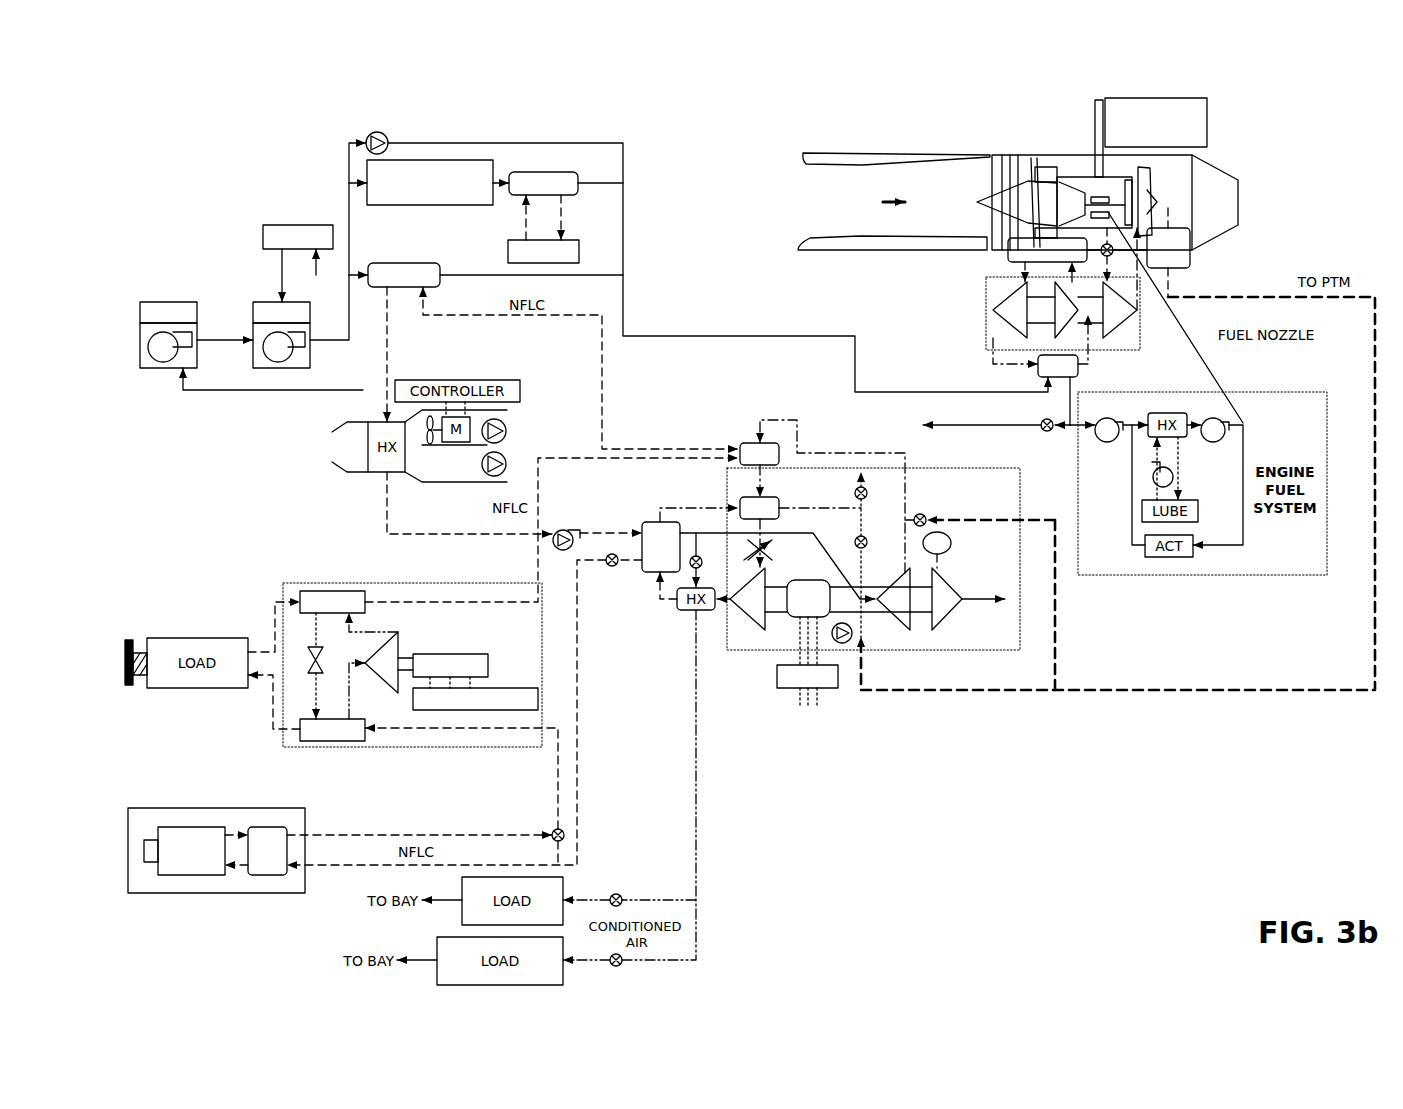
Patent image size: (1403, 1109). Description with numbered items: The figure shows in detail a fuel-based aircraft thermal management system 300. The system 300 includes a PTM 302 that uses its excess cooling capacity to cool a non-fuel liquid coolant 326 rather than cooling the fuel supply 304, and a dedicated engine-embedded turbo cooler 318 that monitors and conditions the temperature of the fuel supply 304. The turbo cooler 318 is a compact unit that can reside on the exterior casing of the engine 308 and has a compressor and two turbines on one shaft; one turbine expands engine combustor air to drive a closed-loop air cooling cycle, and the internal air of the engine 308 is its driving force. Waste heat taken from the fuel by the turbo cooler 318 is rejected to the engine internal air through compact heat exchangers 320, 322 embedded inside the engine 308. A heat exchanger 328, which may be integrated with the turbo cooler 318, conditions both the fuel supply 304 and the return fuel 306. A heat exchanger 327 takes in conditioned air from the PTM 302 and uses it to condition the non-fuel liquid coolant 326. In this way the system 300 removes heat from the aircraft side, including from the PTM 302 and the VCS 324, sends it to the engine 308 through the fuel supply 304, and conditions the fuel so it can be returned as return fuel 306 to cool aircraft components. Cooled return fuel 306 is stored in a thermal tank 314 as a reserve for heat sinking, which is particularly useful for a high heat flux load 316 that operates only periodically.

The system 300 is at (283, 117).
The PTM 302 is at (727, 495).
The fuel supply 304 is at (688, 336).
The return fuel 306 is at (228, 392).
The engine 308 is at (1045, 153).
The thermal tank 314 is at (149, 370).
The load 316 is at (192, 827).
The turbo cooler 318 is at (986, 345).
The heat exchanger 320 is at (1005, 257).
The heat exchanger 322 is at (1190, 262).
The VCS 324 is at (460, 747).
The non-fuel liquid coolant 326 is at (577, 673).
The heat exchanger 327 is at (650, 522).
The heat exchanger 328 is at (1078, 373).